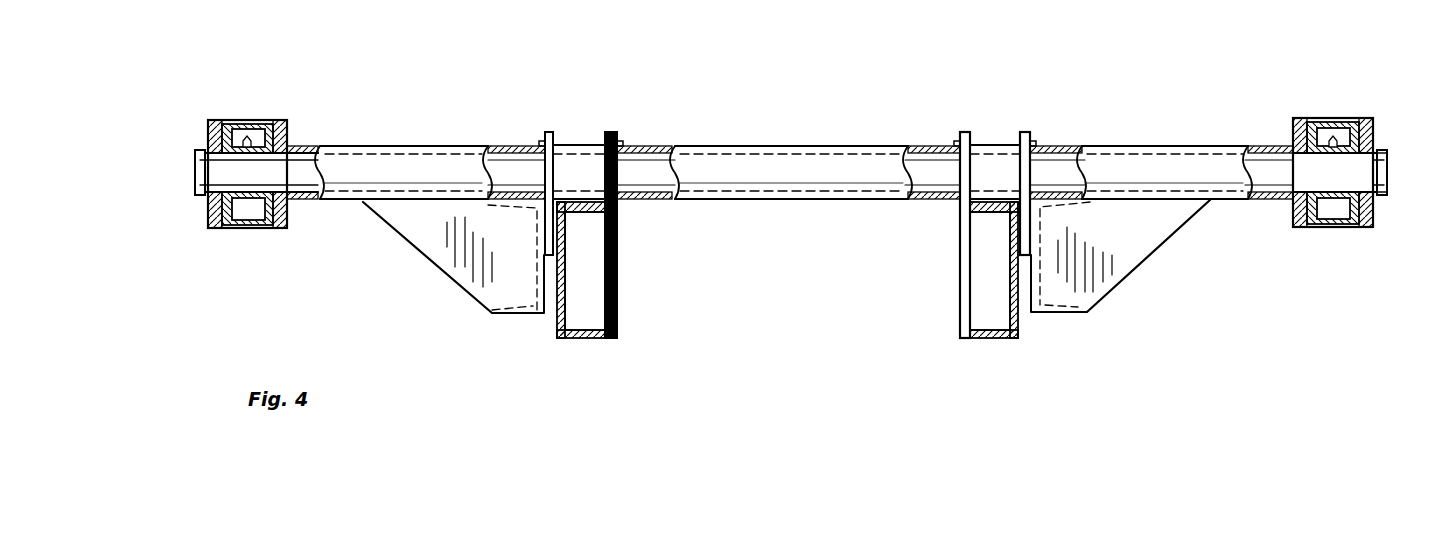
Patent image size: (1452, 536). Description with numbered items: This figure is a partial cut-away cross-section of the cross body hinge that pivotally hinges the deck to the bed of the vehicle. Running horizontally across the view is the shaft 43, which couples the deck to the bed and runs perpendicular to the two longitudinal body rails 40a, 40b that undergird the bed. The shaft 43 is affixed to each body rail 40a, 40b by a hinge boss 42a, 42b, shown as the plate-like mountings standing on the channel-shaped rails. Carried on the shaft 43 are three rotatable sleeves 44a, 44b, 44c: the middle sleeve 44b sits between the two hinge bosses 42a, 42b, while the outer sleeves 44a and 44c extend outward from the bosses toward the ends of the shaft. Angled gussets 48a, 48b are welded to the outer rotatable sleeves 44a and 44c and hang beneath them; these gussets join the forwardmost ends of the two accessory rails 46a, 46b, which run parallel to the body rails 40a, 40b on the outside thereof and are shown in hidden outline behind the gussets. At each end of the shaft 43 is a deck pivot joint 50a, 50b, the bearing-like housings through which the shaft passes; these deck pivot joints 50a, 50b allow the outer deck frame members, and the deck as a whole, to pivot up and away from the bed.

The longitudinal body rail 40a is at (1003, 338).
The longitudinal body rail 40b is at (582, 338).
The hinge boss 42a is at (1017, 131).
The hinge boss 42b is at (603, 131).
The shaft 43 is at (287, 170).
The rotatable sleeve 44a is at (1145, 148).
The rotatable sleeve 44b is at (778, 146).
The rotatable sleeve 44c is at (422, 147).
The accessory rail 46a is at (1058, 313).
The accessory rail 46b is at (530, 313).
The angled gusset 48a is at (1147, 233).
The angled gusset 48b is at (418, 218).
The deck pivot joint 50a is at (1367, 118).
The deck pivot joint 50b is at (228, 120).